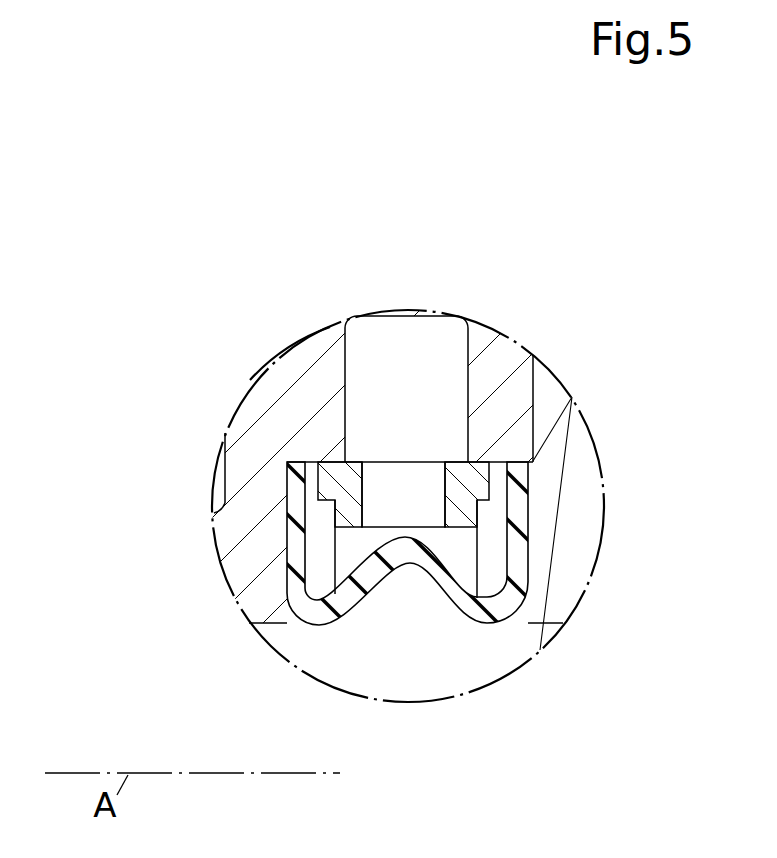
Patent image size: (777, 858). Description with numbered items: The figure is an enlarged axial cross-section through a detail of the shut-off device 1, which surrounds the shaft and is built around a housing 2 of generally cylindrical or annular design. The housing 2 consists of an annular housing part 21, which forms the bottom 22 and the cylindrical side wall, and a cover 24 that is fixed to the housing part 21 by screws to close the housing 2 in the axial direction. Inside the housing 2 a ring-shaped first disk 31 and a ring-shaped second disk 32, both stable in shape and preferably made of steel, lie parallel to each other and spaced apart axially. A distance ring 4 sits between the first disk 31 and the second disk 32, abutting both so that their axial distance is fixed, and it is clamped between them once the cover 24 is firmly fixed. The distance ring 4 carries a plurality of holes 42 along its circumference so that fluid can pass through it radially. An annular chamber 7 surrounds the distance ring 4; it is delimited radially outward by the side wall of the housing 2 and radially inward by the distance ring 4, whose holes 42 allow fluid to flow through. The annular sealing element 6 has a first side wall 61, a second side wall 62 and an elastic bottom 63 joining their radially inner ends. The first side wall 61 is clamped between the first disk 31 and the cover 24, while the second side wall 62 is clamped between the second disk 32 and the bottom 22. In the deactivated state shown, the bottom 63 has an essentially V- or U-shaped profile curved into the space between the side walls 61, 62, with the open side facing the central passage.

The shut-off device 1 is at (463, 205).
The housing 2 is at (531, 333).
The distance ring 4 is at (338, 490).
The sealing element 6 is at (429, 595).
The annular chamber 7 is at (380, 352).
The housing part 21 is at (291, 345).
The bottom 22 is at (253, 558).
The cover 24 is at (570, 445).
The first disk 31 is at (488, 545).
The second disk 32 is at (320, 528).
The holes 42 is at (423, 480).
The first side wall 61 is at (515, 568).
The second side wall 62 is at (285, 540).
The elastic bottom 63 is at (403, 552).